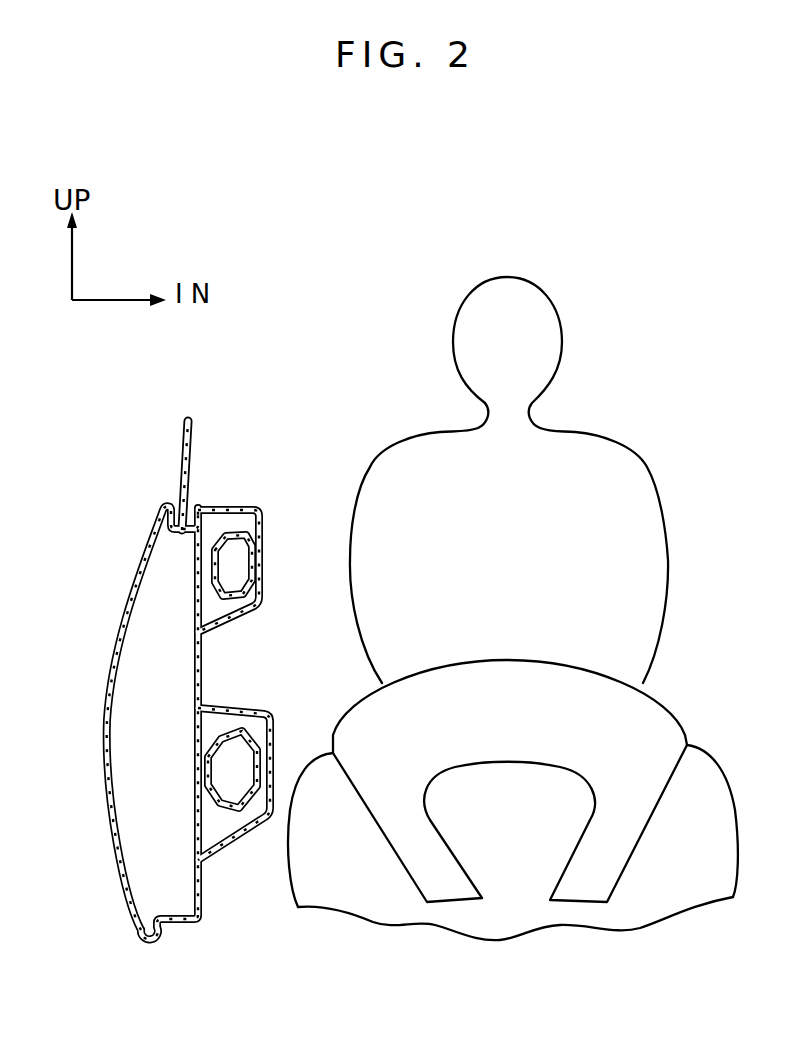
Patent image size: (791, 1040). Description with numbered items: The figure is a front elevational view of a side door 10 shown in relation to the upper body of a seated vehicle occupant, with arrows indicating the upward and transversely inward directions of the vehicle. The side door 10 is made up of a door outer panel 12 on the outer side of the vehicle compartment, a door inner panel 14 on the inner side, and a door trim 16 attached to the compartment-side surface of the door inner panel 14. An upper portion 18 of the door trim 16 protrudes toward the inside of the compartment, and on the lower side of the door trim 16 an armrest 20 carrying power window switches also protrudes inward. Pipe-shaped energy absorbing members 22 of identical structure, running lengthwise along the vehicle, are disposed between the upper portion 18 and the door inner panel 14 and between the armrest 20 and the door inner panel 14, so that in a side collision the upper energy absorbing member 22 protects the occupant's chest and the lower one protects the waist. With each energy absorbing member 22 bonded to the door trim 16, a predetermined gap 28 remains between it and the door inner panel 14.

The side door 10 is at (123, 550).
The door outer panel 12 is at (102, 692).
The door inner panel 14 is at (180, 923).
The door trim 16 is at (209, 897).
The upper portion 18 is at (262, 533).
The armrest 20 is at (243, 712).
The energy absorbing member 22 is at (240, 533).
The gap 28 is at (208, 575).